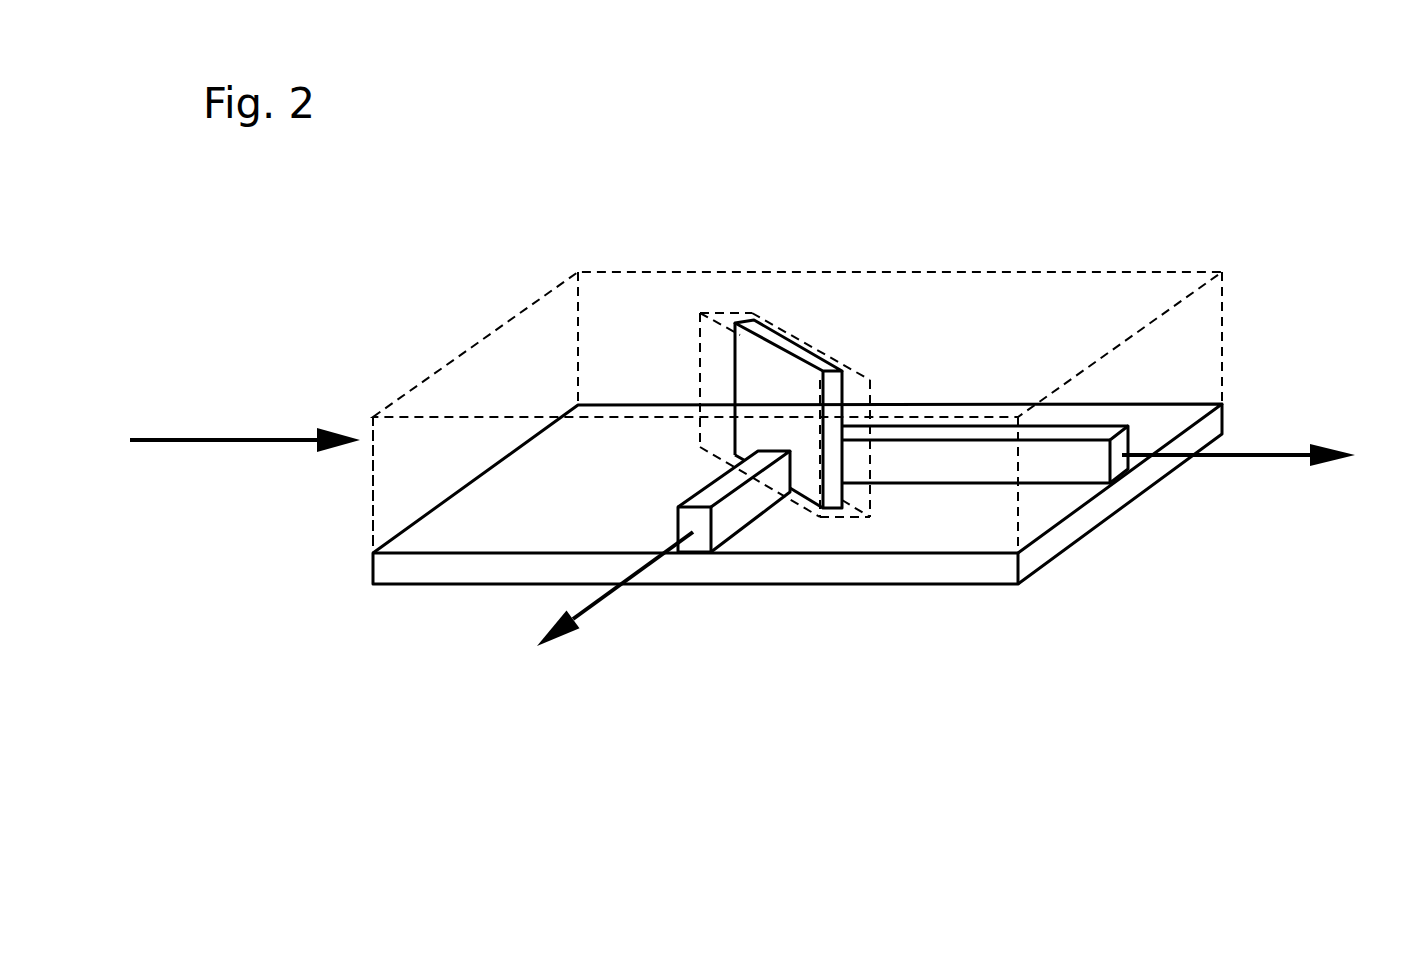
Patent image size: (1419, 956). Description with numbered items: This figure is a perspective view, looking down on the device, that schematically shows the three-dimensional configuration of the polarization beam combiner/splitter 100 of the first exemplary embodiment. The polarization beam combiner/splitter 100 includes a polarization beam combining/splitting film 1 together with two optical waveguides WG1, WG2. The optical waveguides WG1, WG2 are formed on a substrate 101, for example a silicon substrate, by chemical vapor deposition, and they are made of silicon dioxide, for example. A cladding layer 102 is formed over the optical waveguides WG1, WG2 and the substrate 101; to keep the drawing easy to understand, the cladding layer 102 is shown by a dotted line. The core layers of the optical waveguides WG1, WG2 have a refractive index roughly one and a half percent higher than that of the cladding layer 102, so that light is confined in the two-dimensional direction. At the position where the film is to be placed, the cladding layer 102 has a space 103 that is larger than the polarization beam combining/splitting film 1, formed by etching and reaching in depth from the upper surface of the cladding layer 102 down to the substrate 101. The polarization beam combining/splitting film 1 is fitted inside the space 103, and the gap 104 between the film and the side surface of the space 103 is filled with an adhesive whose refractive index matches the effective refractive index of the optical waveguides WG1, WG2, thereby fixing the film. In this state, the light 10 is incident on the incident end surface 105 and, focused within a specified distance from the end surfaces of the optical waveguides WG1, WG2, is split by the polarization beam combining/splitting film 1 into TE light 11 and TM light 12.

The polarization beam combiner/splitter 100 is at (818, 98).
The substrate 101 is at (895, 573).
The cladding layer 102 is at (1090, 282).
The space 103 is at (845, 362).
The gap 104 is at (731, 328).
The incident end surface 105 is at (372, 487).
The polarization beam combining/splitting film 1 is at (830, 351).
The light 10 is at (237, 438).
The TE light 11 is at (1272, 455).
The TM light 12 is at (602, 603).
The optical waveguide WG1 is at (1083, 473).
The optical waveguide WG2 is at (740, 520).